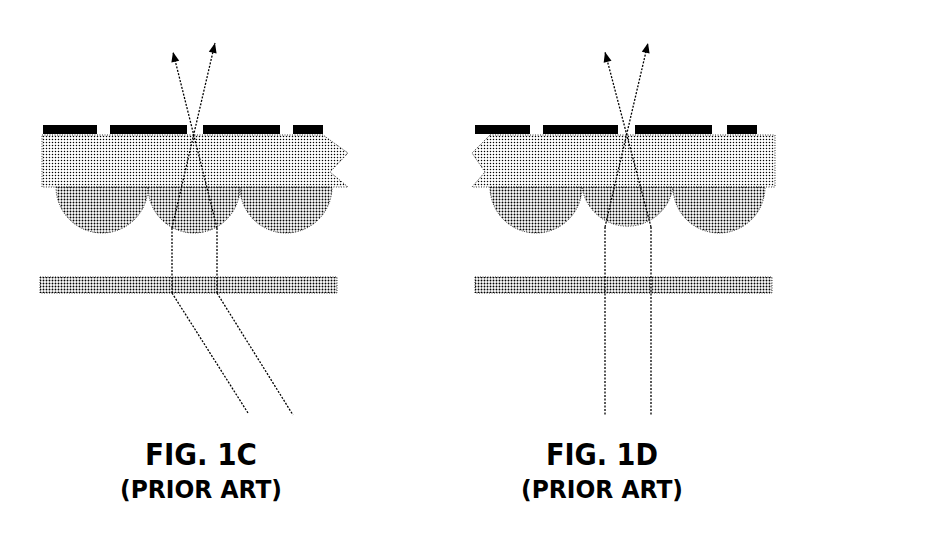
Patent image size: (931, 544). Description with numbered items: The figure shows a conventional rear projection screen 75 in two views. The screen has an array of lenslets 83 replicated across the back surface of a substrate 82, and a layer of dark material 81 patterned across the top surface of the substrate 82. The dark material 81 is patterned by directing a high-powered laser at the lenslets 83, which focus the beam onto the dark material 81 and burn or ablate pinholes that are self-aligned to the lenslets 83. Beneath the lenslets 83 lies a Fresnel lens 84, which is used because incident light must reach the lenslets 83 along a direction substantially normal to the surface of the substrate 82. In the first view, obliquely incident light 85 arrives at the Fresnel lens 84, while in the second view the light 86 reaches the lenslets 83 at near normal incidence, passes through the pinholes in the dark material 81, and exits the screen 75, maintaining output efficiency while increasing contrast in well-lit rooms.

In FIG. 1C, the rear projection screen 75 is at (307, 72).
In FIG. 1D, the rear projection screen 75 is at (742, 55).
In FIG. 1C, the dark material 81 is at (180, 115).
In FIG. 1D, the dark material 81 is at (616, 118).
In FIG. 1C, the substrate 82 is at (70, 172).
In FIG. 1D, the substrate 82 is at (514, 172).
In FIG. 1C, the lenslets 83 is at (89, 219).
In FIG. 1D, the lenslets 83 is at (529, 219).
In FIG. 1C, the Fresnel lens 84 is at (188, 273).
In FIG. 1D, the Fresnel lens 84 is at (623, 273).
In FIG. 1C, the oblique light rays 85 is at (236, 229).
In FIG. 1D, the normal incident light rays 86 is at (603, 229).